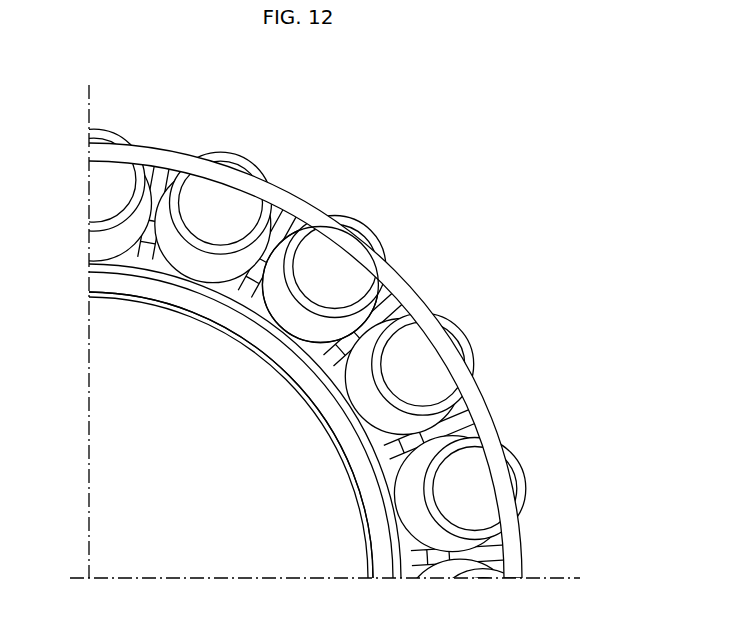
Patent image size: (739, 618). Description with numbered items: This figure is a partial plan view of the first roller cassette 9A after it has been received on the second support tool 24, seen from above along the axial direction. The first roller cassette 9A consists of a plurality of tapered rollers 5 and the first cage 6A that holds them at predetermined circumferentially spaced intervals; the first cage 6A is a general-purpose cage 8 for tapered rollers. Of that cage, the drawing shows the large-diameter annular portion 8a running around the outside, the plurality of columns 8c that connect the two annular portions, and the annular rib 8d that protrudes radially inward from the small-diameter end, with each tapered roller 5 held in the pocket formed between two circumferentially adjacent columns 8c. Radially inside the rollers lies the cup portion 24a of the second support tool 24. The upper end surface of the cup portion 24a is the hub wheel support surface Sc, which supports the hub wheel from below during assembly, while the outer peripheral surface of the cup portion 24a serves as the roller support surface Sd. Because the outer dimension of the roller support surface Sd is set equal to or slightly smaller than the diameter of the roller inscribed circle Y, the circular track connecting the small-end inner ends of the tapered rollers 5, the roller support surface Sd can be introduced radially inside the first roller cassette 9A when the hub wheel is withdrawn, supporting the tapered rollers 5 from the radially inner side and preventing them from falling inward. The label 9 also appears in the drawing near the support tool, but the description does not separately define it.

The cage 8 is at (290, 349).
The cage (retainer) 6A is at (290, 373).
The annular portion of cage 8a is at (308, 207).
The pillar portion of cage 8c is at (283, 232).
The pillar portion of cage 8d is at (400, 296).
The roller 5 is at (378, 235).
The pocket 9A is at (327, 163).
The inner annular portion 9 is at (244, 421).
The inner ring 24 is at (230, 435).
The raceway surface of inner ring 24a is at (296, 388).
The clearance Sc is at (217, 312).
The clearance Sd is at (374, 470).
The gap Y is at (137, 272).